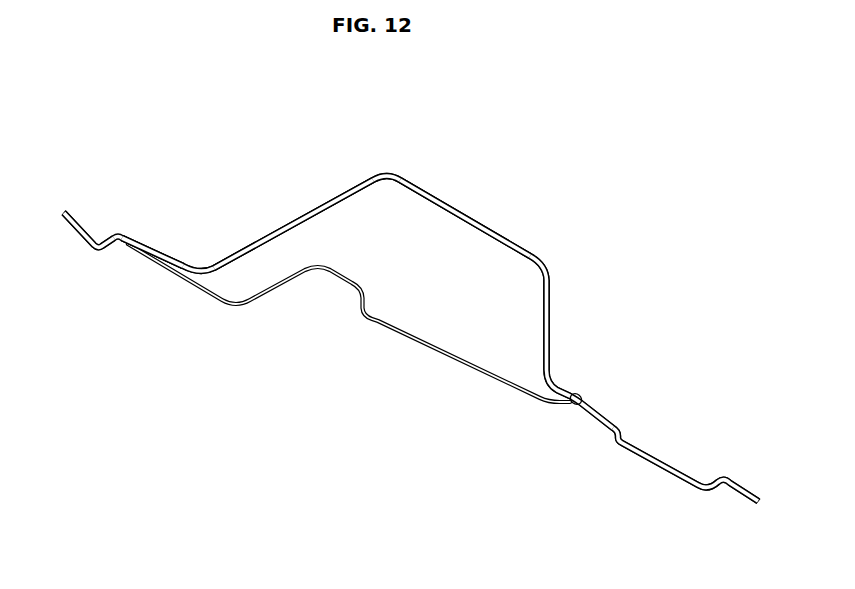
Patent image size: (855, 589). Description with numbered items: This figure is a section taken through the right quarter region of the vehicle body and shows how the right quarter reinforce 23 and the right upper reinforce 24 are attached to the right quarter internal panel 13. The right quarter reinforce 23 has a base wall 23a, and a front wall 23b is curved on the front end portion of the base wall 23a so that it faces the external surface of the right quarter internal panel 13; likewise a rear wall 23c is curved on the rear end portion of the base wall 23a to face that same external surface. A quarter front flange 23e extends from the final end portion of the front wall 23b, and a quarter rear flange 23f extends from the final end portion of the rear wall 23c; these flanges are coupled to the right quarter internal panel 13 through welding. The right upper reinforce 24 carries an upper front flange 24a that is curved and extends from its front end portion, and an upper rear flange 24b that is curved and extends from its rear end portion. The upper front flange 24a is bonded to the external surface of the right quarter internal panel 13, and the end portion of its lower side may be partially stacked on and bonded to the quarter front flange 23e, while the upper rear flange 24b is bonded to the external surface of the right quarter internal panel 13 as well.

The right quarter internal panel 13 is at (380, 318).
The right quarter reinforce 23 is at (417, 170).
The base wall 23a is at (521, 240).
The front wall 23b is at (551, 314).
The rear wall 23c is at (313, 216).
The quarter front flange 23e is at (573, 391).
The quarter rear flange 23f is at (155, 253).
The right upper reinforce 24 is at (457, 207).
The upper front flange 24a is at (620, 418).
The upper rear flange 24b is at (80, 217).